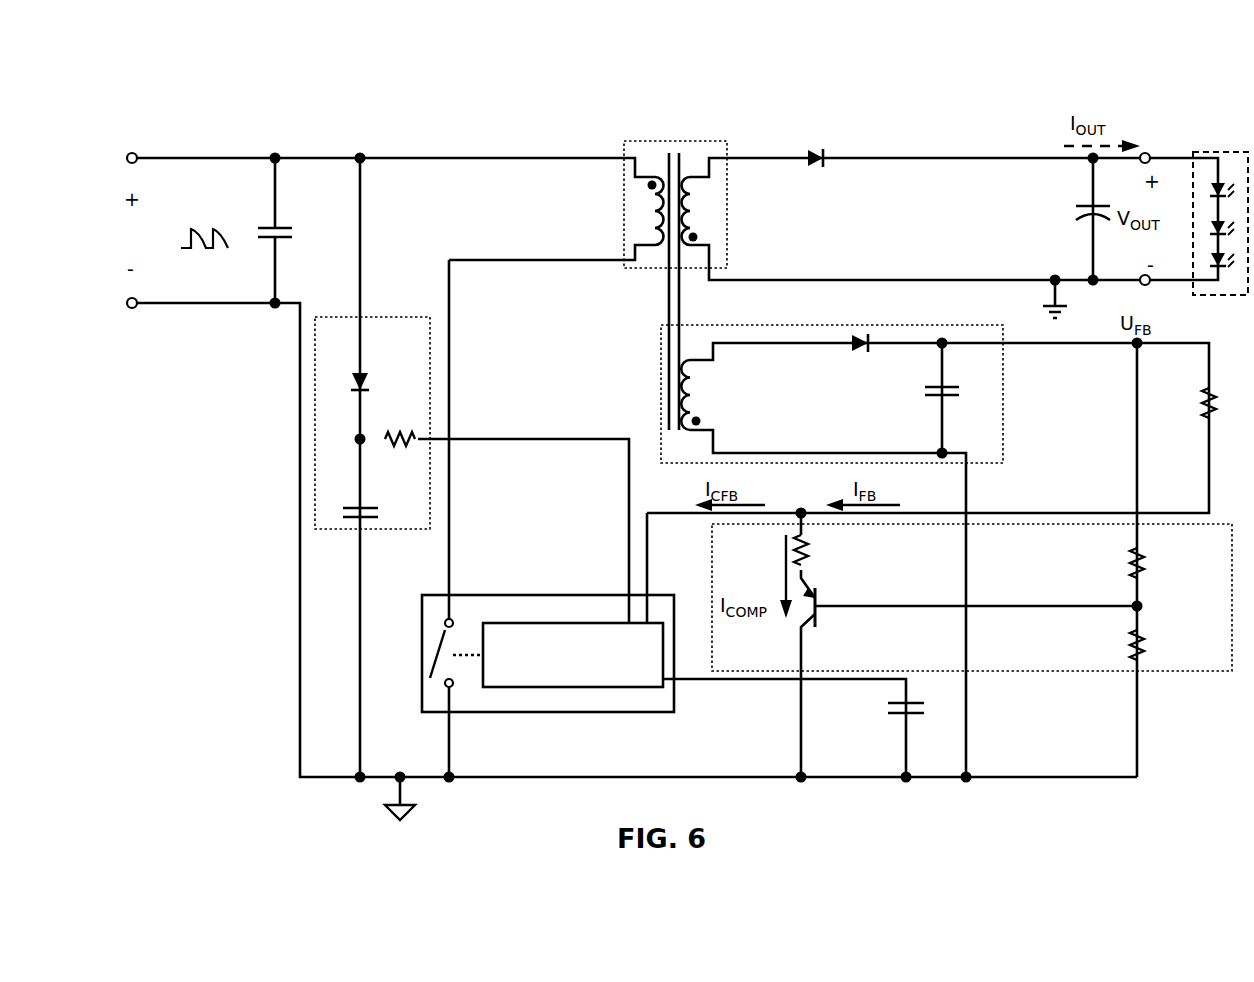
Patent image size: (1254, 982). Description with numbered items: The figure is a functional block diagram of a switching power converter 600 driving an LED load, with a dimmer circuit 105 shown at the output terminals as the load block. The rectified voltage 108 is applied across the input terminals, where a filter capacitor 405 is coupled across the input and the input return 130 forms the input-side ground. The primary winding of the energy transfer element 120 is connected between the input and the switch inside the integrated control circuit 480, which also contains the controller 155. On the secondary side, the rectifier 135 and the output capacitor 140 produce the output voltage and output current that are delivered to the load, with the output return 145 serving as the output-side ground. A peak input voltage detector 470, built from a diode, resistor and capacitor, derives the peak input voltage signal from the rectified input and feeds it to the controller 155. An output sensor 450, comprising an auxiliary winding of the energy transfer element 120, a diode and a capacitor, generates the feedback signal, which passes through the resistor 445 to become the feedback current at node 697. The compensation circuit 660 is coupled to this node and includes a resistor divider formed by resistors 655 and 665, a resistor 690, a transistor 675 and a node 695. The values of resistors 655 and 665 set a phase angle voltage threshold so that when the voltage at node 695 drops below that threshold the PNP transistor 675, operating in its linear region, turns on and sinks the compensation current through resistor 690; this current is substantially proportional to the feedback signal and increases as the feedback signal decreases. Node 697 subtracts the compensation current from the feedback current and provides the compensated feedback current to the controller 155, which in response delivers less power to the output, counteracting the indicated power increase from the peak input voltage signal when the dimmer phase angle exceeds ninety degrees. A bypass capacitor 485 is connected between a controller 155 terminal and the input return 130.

The switching power converter 600 is at (1020, 85).
The rectified voltage 108 is at (182, 226).
The filter capacitor 405 is at (290, 217).
The peak input voltage detector 470 is at (383, 310).
The energy transfer element 120 is at (678, 138).
The rectifier 135 is at (818, 138).
The dimmer circuit 105 is at (1226, 146).
The output capacitor 140 is at (1072, 208).
The output return 145 is at (1038, 308).
The output sensor 450 is at (1017, 395).
The resistor 445 is at (1200, 408).
The node 697 is at (800, 509).
The resistor 690 is at (820, 546).
The transistor 675 is at (826, 590).
The compensation circuit 660 is at (1040, 676).
The resistor 655 is at (1125, 570).
The node 695 is at (1145, 605).
The resistor 665 is at (1127, 646).
The integrated control circuit 480 is at (506, 589).
The controller 155 is at (588, 690).
The input return 130 is at (424, 804).
The bypass capacitor 485 is at (930, 712).